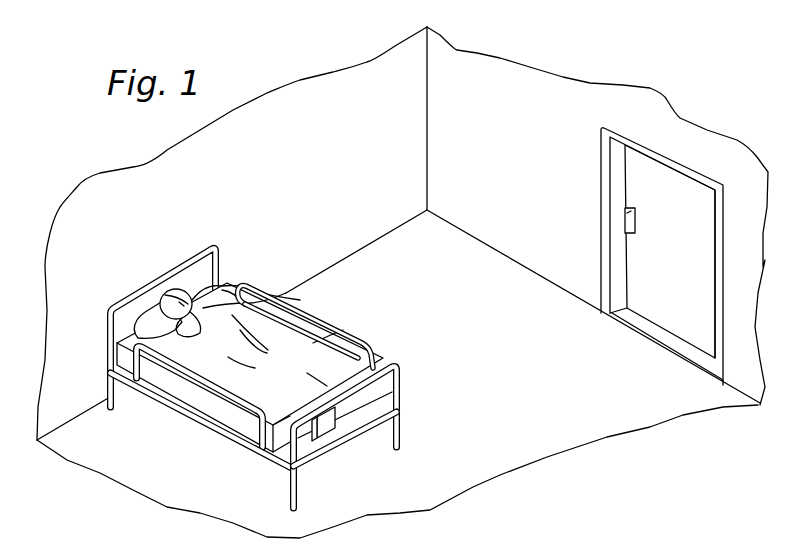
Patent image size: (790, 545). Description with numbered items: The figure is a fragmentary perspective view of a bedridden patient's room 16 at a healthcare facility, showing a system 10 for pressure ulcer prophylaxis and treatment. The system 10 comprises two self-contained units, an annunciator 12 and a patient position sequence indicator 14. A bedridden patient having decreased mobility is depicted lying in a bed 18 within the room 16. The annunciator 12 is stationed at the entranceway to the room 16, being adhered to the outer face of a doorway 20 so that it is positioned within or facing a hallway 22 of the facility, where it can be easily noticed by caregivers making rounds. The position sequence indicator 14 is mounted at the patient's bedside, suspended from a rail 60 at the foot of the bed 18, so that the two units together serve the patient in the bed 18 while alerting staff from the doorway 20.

The system for pressure ulcer prophylaxis and treatment 10 is at (599, 215).
The annunciator 12 is at (635, 207).
The patient position sequence indicator 14 is at (325, 420).
The patient's room 16 is at (487, 326).
The bed 18 is at (338, 358).
The doorway 20 is at (612, 255).
The hallway 22 is at (692, 296).
The rail 60 is at (350, 376).